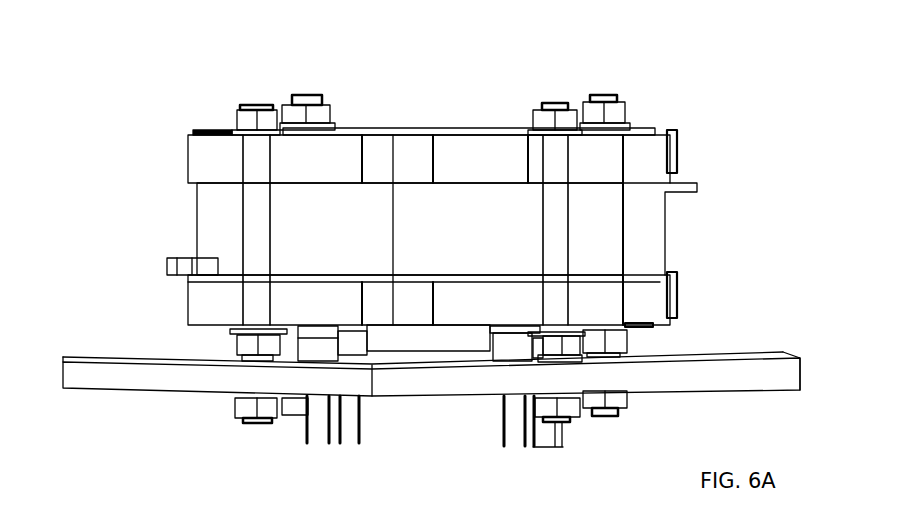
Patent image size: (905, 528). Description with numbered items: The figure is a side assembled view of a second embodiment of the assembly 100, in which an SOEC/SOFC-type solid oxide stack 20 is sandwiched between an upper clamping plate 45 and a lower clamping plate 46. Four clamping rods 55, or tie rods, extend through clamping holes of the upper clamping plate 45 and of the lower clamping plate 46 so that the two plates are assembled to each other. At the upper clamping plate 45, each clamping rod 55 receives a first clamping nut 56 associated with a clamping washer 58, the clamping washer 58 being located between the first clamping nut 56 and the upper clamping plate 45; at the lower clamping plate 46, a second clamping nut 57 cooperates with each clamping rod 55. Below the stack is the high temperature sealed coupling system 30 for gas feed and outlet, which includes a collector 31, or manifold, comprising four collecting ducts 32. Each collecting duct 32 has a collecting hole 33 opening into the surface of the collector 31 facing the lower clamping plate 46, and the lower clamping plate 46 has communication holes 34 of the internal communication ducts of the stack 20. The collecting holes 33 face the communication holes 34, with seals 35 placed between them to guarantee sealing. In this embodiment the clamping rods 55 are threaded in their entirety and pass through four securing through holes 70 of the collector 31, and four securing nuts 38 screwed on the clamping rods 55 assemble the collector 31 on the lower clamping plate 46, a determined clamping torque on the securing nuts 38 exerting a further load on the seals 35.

The assembly 100 is at (703, 72).
The SOEC/SOFC-type solid oxide stack 20 is at (208, 203).
The upper clamping plate 45 is at (203, 152).
The lower clamping plate 46 is at (197, 293).
The clamping rods 55 is at (257, 240).
The first clamping nut 56 is at (307, 107).
The second clamping nut 57 is at (240, 350).
The clamping washer 58 is at (233, 333).
The securing through holes 70 is at (245, 360).
The high temperature sealed coupling system 30 is at (60, 402).
The collector 31 is at (787, 372).
The collecting ducts 32 is at (348, 444).
The collecting hole 33 is at (345, 340).
The communication holes 34 is at (515, 338).
The seals 35 is at (493, 336).
The securing nuts 38 is at (287, 403).